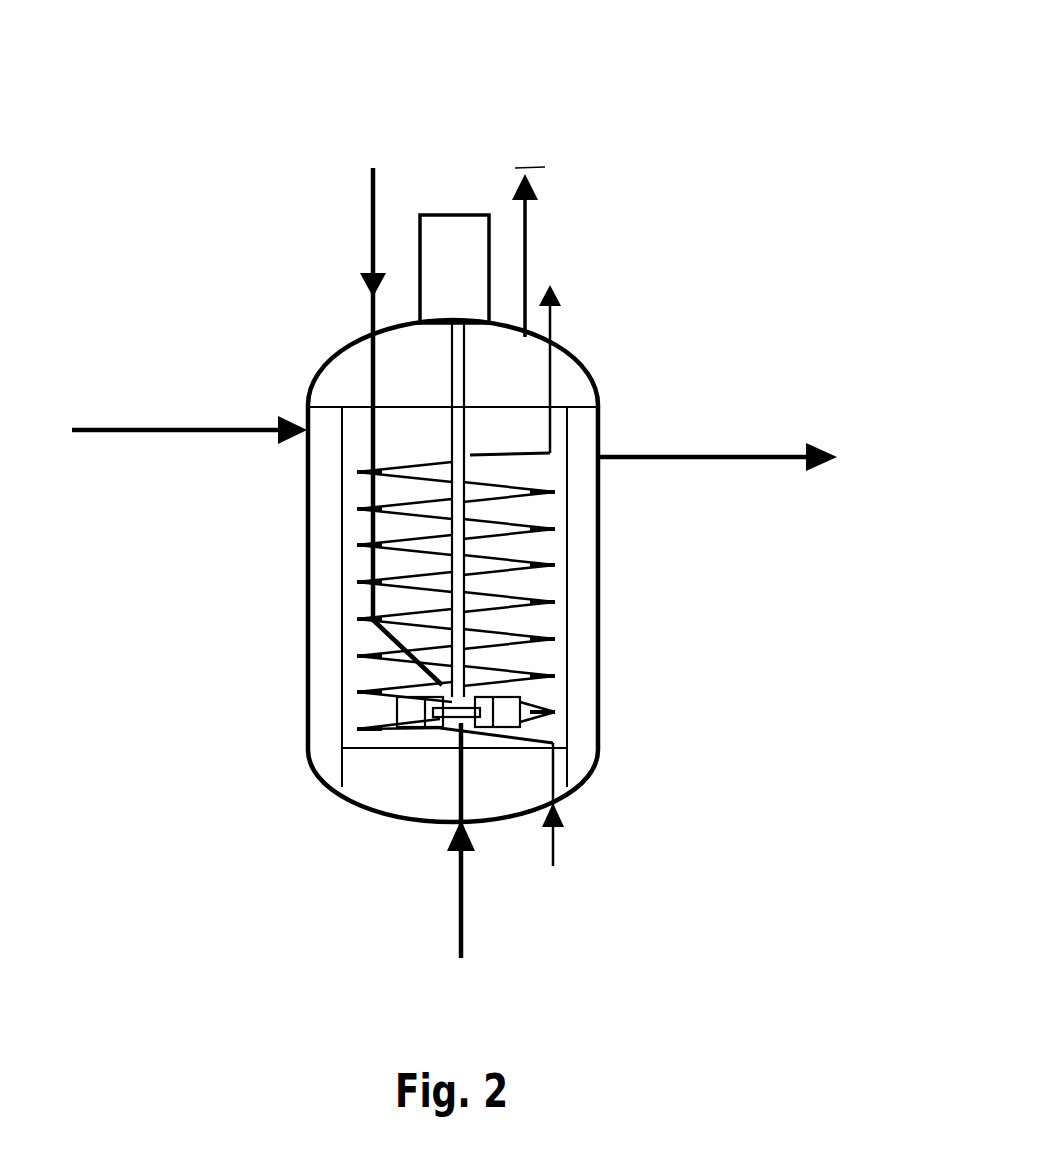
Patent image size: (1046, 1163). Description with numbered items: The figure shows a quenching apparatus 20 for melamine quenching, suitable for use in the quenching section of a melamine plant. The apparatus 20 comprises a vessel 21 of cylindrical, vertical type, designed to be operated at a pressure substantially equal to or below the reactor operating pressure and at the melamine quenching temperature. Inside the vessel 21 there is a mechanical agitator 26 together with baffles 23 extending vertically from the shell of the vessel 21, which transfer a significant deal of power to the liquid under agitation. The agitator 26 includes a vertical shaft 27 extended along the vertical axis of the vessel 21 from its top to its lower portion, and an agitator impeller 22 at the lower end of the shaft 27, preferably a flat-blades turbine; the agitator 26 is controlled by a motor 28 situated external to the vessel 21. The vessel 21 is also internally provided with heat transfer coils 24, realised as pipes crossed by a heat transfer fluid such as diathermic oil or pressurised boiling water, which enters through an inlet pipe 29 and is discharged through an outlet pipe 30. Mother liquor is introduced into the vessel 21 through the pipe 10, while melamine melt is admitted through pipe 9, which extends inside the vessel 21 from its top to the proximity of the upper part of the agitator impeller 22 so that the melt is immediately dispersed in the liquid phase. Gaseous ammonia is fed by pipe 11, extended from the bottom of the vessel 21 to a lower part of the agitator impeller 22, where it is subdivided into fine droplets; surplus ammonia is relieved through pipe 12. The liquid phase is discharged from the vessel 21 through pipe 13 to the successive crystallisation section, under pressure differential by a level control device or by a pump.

The pipe 9 is at (372, 247).
The pipe 10 is at (215, 425).
The pipe 11 is at (458, 882).
The pipe 12 is at (523, 260).
The pipe 13 is at (693, 460).
The quenching apparatus 20 is at (662, 139).
The vessel 21 is at (308, 540).
The agitator impeller 22 is at (425, 707).
The baffles 23 is at (580, 613).
The heat transfer coils 24 is at (493, 457).
The mechanical agitator 26 is at (512, 587).
The vertical shaft 27 is at (447, 380).
The motor 28 is at (448, 237).
The inlet pipe 29 is at (555, 852).
The outlet pipe 30 is at (551, 330).